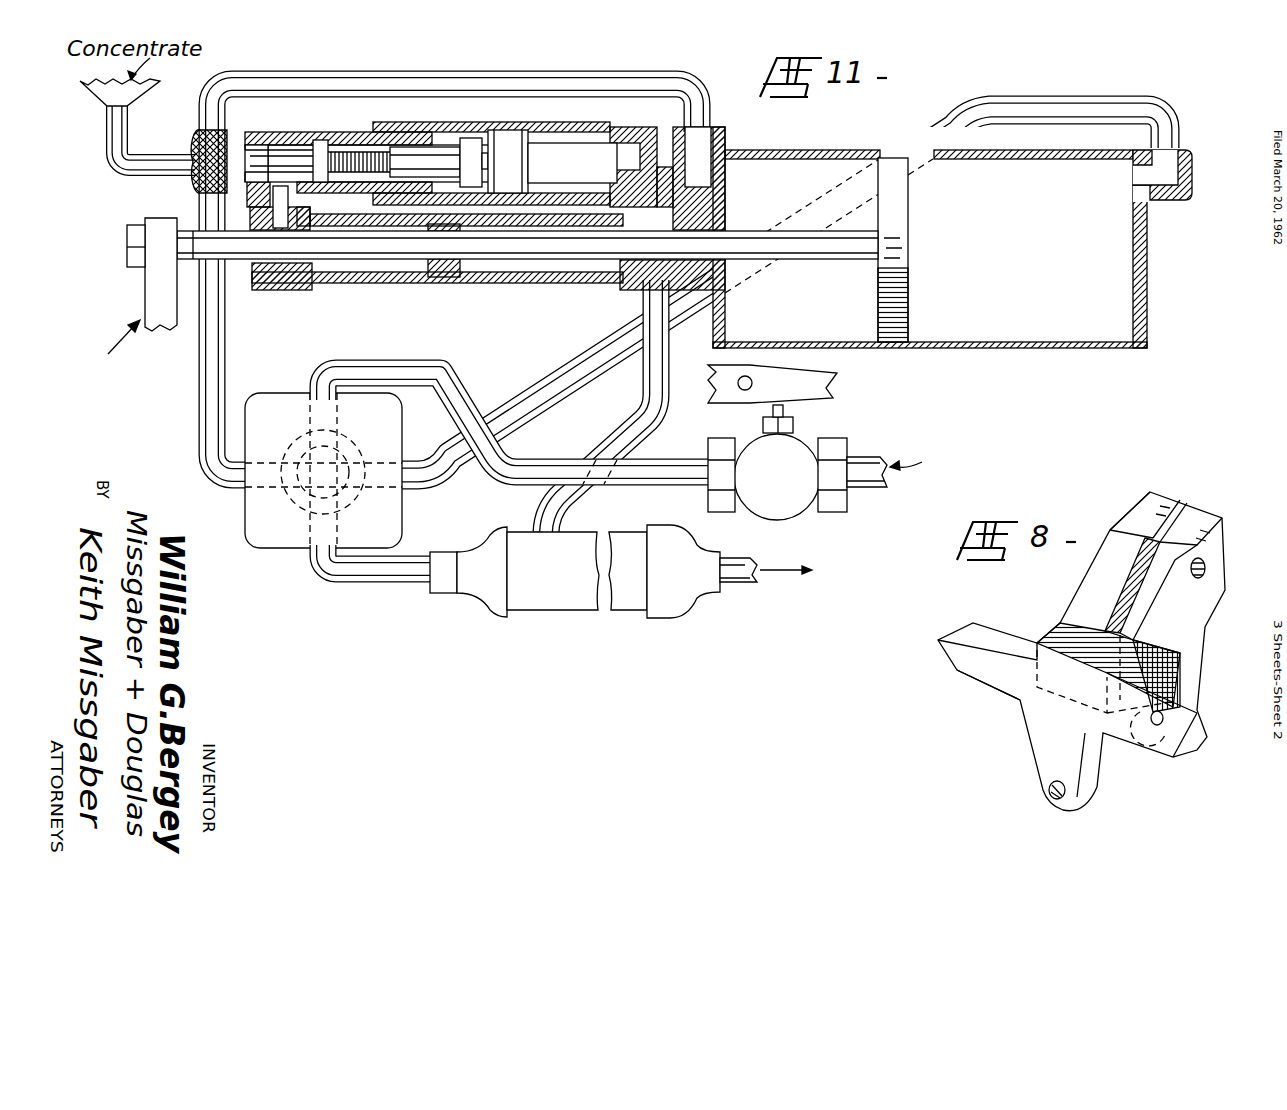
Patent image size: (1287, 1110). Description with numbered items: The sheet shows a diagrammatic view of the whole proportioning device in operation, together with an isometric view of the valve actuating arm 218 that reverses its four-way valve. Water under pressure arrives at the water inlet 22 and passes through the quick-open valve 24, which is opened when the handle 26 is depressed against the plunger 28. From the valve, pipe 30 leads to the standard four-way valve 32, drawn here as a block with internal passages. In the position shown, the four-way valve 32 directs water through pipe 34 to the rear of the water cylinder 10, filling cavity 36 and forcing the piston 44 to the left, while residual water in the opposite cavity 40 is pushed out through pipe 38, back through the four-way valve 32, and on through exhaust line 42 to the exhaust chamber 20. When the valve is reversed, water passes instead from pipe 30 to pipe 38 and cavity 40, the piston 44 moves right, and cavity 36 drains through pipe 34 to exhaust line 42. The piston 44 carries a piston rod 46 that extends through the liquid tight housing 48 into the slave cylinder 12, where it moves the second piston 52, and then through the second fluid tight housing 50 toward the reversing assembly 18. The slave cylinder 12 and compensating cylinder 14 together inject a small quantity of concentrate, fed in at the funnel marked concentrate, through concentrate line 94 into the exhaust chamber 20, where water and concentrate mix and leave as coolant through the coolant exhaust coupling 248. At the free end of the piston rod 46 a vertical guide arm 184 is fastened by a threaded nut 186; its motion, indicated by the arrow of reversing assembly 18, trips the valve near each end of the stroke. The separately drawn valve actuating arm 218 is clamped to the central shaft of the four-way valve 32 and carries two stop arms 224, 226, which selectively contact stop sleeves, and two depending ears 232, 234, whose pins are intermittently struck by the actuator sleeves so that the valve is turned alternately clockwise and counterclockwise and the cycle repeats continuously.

In FIG. 11, the water cylinder 10 is at (1148, 284).
In FIG. 11, the slave cylinder 12 is at (545, 280).
In FIG. 11, the compensating cylinder 14 is at (507, 120).
In FIG. 11, the reversing assembly 18 is at (107, 341).
In FIG. 11, the exhaust chamber 20 is at (538, 600).
In FIG. 11, the water supply pipe 22 is at (866, 456).
In FIG. 11, the valve 24 is at (784, 483).
In FIG. 11, the handle 26 is at (825, 380).
In FIG. 11, the plunger 28 is at (788, 412).
In FIG. 11, the pipe 30 is at (510, 487).
In FIG. 11, the four-way valve 32 is at (257, 521).
In FIG. 11, the pipe 34 is at (1045, 108).
In FIG. 11, the cavity 36 is at (1060, 300).
In FIG. 11, the pipe 38 is at (430, 60).
In FIG. 11, the cavity 40 is at (801, 325).
In FIG. 11, the exhaust line 42 is at (376, 572).
In FIG. 11, the piston 44 is at (910, 297).
In FIG. 11, the piston rod 46 is at (362, 262).
In FIG. 11, the liquid tight housing 48 is at (726, 207).
In FIG. 11, the fluid tight housing 50 is at (255, 278).
In FIG. 11, the second piston 52 is at (440, 278).
In FIG. 11, the concentrate line 94 is at (630, 436).
In FIG. 11, the vertical guide arm 184 is at (150, 288).
In FIG. 11, the threaded nut 186 is at (130, 224).
In FIG. 11, the coolant exhaust coupling 248 is at (740, 583).
In FIG. 8, the valve actuating arm 218 is at (1087, 578).
In FIG. 8, the stop arm 224 is at (1160, 748).
In FIG. 8, the stop arm 226 is at (957, 654).
In FIG. 8, the depending ear 232 is at (1053, 748).
In FIG. 8, the depending ear 234 is at (1188, 670).